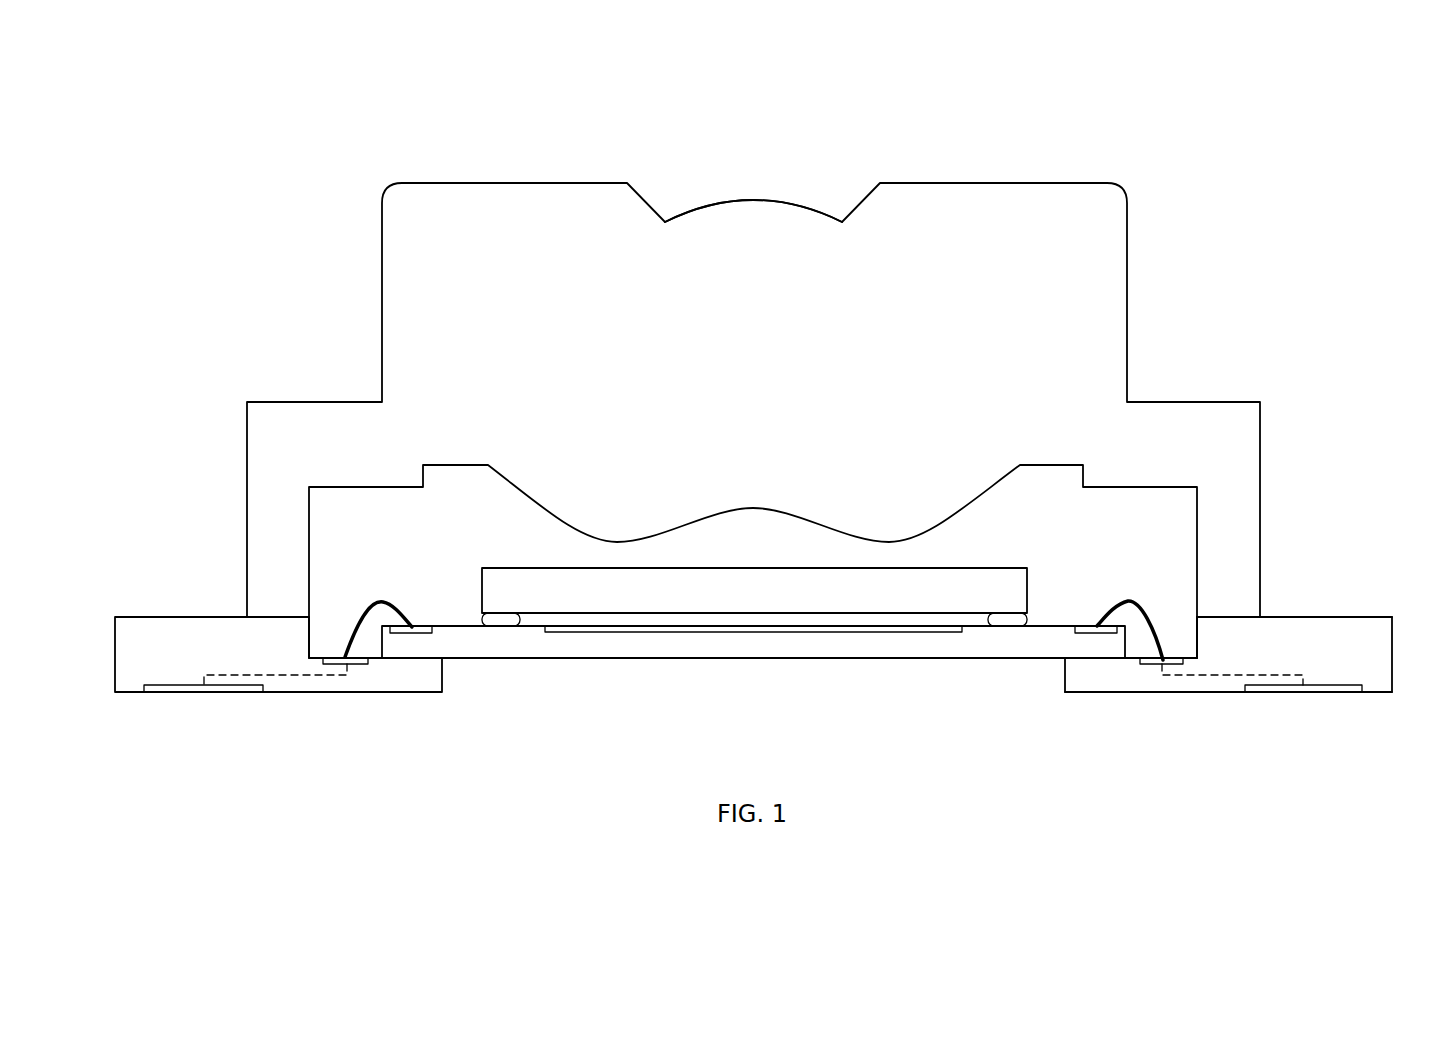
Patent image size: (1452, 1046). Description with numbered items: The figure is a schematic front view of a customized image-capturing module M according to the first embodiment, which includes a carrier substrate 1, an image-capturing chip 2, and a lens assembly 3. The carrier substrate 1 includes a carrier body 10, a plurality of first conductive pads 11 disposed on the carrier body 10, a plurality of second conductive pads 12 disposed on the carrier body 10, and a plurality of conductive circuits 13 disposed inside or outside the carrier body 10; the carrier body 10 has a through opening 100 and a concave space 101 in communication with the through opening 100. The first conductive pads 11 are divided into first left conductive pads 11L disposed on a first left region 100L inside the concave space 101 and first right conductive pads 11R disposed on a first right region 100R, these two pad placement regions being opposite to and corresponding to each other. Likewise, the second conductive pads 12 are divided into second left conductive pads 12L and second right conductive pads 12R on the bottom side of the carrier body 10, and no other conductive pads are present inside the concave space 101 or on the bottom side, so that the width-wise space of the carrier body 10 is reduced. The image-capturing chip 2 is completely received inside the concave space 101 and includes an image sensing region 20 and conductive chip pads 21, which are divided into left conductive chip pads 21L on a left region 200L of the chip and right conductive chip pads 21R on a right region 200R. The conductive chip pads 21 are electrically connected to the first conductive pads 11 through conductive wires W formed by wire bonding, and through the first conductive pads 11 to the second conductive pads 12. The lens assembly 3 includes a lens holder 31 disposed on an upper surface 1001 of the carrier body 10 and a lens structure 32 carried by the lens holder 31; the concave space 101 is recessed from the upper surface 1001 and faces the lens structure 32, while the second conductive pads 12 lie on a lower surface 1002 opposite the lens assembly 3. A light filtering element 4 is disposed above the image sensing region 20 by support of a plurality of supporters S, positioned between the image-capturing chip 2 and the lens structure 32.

The customized image-capturing module M is at (108, 133).
The carrier substrate 1 is at (114, 655).
The carrier body 10 is at (1373, 657).
The through opening 100 is at (626, 690).
The first left region 100L is at (318, 645).
The first right region 100R is at (1188, 638).
The upper surface 1001 is at (1345, 609).
The lower surface 1002 is at (1102, 702).
The concave space 101 is at (1164, 616).
The first conductive pads 11 is at (773, 716).
The first left conductive pads 11L is at (357, 665).
The first right conductive pads 11R is at (1151, 665).
The second conductive pads 12 is at (778, 721).
The second left conductive pads 12L is at (170, 692).
The second right conductive pads 12R is at (1327, 692).
The conductive circuits 13 is at (303, 677).
The image-capturing chip 2 is at (850, 662).
The image sensing region 20 is at (737, 629).
The conductive chip pads 21 is at (753, 663).
The left conductive chip pads 21L is at (418, 634).
The right conductive chip pads 21R is at (1085, 634).
The left region 200L is at (445, 614).
The right region 200R is at (1062, 609).
The lens assembly 3 is at (382, 326).
The lens holder 31 is at (270, 508).
The lens structure 32 is at (749, 222).
The light filtering element 4 is at (621, 566).
The supporters S is at (506, 605).
The conductive wires W is at (362, 595).